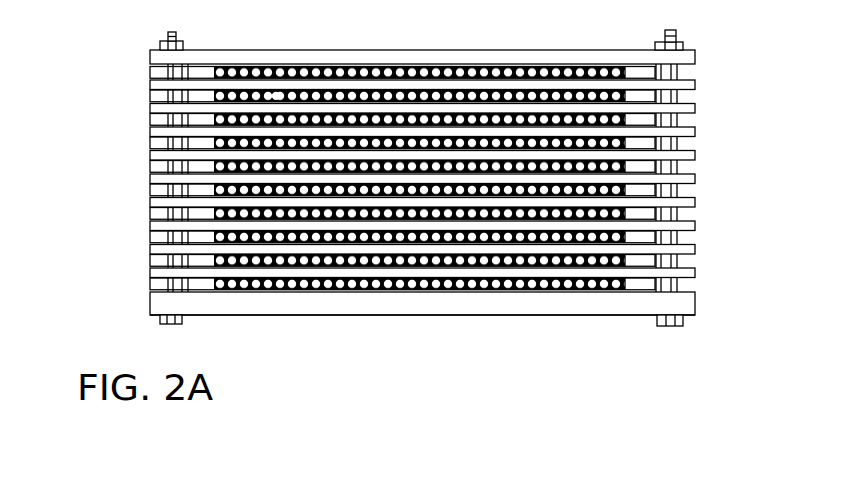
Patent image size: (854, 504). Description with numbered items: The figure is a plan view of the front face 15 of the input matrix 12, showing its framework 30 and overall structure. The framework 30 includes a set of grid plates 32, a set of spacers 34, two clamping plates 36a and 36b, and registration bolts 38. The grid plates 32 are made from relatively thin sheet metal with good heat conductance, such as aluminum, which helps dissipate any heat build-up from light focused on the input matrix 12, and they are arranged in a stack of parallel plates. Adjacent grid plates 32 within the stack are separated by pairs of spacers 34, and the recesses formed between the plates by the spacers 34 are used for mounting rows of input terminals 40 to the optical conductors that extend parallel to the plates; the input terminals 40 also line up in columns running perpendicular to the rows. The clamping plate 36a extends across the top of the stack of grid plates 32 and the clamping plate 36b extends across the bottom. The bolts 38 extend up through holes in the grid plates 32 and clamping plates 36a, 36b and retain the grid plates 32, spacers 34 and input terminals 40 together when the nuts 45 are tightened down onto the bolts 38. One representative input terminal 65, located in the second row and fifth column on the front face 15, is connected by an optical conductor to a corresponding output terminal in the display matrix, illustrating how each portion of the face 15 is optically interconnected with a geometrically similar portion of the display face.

The input matrix 12 is at (325, 360).
The front face 15 is at (423, 320).
The framework 30 is at (147, 178).
The grid plates 32 is at (695, 85).
The spacers 34 is at (194, 142).
The clamping plate 36a is at (582, 62).
The clamping plate 36b is at (584, 305).
The registration bolts 38 is at (160, 322).
The input terminals 40 is at (250, 213).
The nuts 45 is at (165, 41).
The input terminal 65 is at (277, 90).